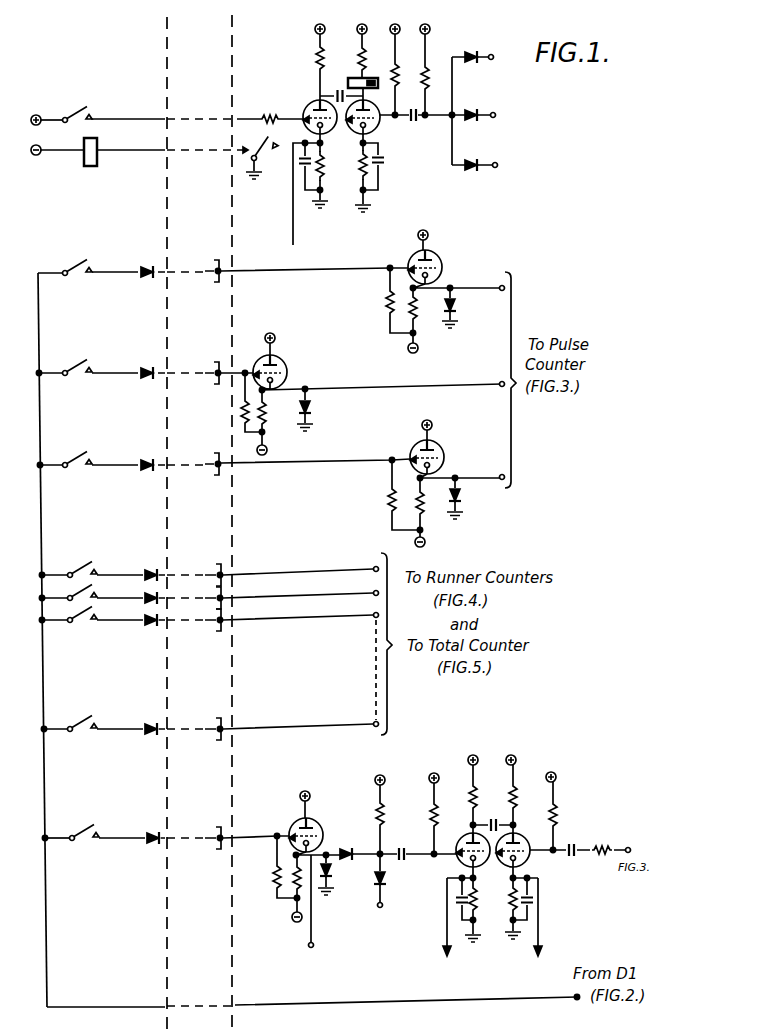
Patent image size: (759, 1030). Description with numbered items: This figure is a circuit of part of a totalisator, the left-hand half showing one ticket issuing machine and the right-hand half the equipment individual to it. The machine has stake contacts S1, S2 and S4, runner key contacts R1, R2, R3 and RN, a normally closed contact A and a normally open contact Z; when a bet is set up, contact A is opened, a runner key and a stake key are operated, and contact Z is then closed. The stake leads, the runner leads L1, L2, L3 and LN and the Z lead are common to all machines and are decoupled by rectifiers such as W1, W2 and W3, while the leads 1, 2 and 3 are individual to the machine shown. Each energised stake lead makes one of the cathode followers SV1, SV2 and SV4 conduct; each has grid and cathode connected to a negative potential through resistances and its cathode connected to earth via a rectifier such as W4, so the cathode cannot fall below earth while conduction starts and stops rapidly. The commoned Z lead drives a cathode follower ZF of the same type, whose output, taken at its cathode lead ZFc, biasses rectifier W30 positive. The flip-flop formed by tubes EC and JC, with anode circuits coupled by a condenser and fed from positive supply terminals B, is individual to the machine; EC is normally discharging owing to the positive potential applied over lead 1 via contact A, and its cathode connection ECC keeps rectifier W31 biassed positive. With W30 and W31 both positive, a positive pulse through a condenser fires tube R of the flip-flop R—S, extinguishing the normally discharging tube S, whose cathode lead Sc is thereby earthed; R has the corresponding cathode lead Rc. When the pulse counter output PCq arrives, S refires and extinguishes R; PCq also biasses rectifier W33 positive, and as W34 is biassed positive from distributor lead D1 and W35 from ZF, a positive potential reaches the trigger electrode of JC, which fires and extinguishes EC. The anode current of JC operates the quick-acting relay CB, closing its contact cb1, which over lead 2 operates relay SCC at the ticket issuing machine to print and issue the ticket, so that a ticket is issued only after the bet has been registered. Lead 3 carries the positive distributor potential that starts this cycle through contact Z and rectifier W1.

The contact A is at (78, 106).
The relay SCC is at (106, 155).
The lead 1 is at (197, 110).
The lead 2 is at (172, 141).
The lead 3 is at (313, 993).
The contact of relay CB cb1 is at (267, 153).
The tube EC is at (312, 112).
The relay CB is at (347, 66).
The tube JC is at (372, 120).
The supply voltage terminal B is at (480, 402).
The rectifier W34 is at (487, 45).
The distributor lead D1 is at (502, 58).
The rectifier W33 is at (477, 109).
The PC9 output PCq is at (566, 480).
The rectifier W35 is at (477, 169).
The zero flip-flop terminal ZFc is at (409, 563).
The cathode connection of tube EC ECC is at (340, 945).
The stake contact S1 is at (86, 260).
The stake contact S2 is at (86, 360).
The stake contact S4 is at (86, 452).
The rectifier W3 is at (141, 472).
The cathode follower SV1 is at (440, 267).
The cathode follower SV2 is at (284, 372).
The cathode follower SV4 is at (442, 457).
The rectifier W4 is at (466, 308).
The runner key contact R1 is at (73, 566).
The runner key contact R2 is at (74, 591).
The runner key contact R3 is at (72, 613).
The runner key contact RN is at (76, 717).
The rectifier W2 is at (154, 567).
The runner counter line 1 L1 is at (362, 560).
The runner counter line 2 L2 is at (362, 585).
The runner counter line 3 L3 is at (362, 607).
The runner counter line N LN is at (362, 713).
The contact Z is at (78, 830).
The rectifier W1 is at (145, 847).
The cathode follower ZF is at (292, 833).
The rectifier W30 is at (345, 842).
The rectifier W31 is at (387, 875).
The tube R is at (465, 846).
The tube S is at (518, 846).
The reset output to FIG.3 Rc is at (445, 937).
The cathode lead Sc is at (563, 928).